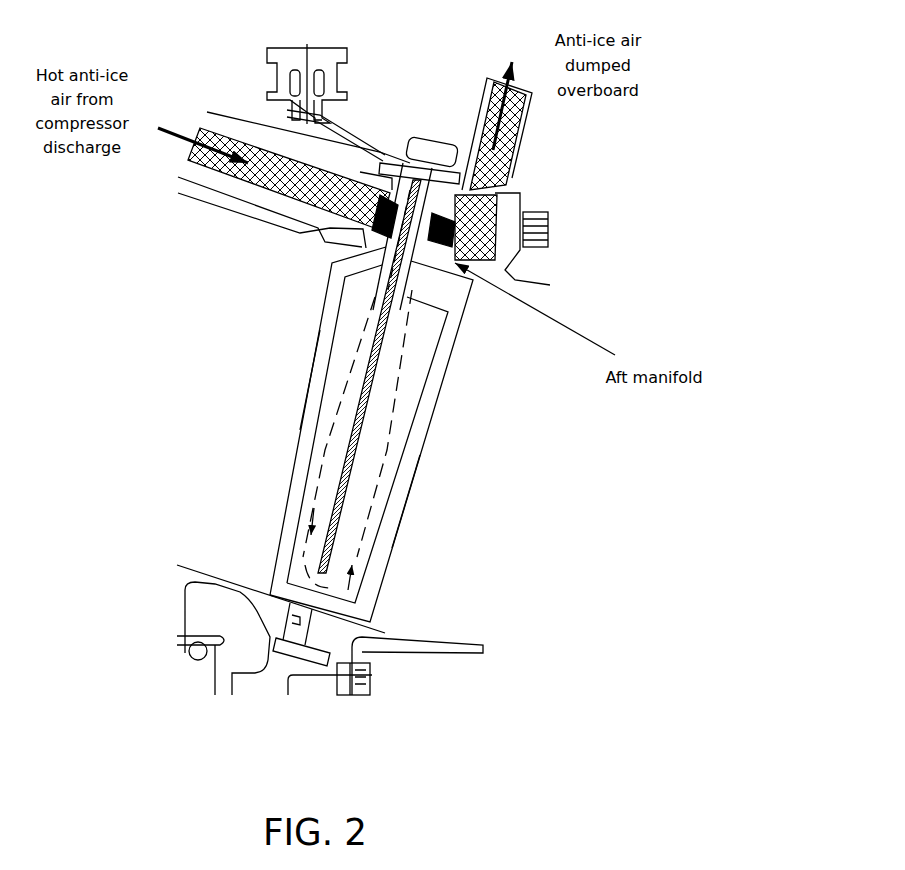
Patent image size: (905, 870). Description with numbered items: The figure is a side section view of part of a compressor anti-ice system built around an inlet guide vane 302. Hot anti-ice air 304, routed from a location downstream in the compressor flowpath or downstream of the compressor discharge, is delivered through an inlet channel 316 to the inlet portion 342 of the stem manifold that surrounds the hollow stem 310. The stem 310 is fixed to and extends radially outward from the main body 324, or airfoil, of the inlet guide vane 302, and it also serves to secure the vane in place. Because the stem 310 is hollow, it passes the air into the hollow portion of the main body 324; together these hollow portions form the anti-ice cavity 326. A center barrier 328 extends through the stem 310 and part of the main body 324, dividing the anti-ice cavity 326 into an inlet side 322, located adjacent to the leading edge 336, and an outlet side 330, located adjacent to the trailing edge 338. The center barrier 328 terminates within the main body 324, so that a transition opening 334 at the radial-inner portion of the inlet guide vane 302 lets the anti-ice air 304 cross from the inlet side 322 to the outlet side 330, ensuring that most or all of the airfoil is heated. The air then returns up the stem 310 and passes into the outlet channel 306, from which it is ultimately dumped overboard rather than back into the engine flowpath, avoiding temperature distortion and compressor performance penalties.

The inlet guide vane 302 is at (464, 385).
The anti-ice air 304 is at (178, 125).
The outlet channel 306 is at (512, 127).
The stem 310 is at (405, 155).
The inlet channel 316 is at (390, 150).
The inlet side 322 is at (353, 323).
The main body 324 is at (452, 338).
The anti-ice cavity 326 is at (298, 461).
The center barrier 328 is at (382, 415).
The outlet side 330 is at (393, 470).
The transition opening 334 is at (310, 575).
The leading edge 336 is at (298, 380).
The trailing edge 338 is at (418, 530).
The inlet portion 342 is at (362, 240).